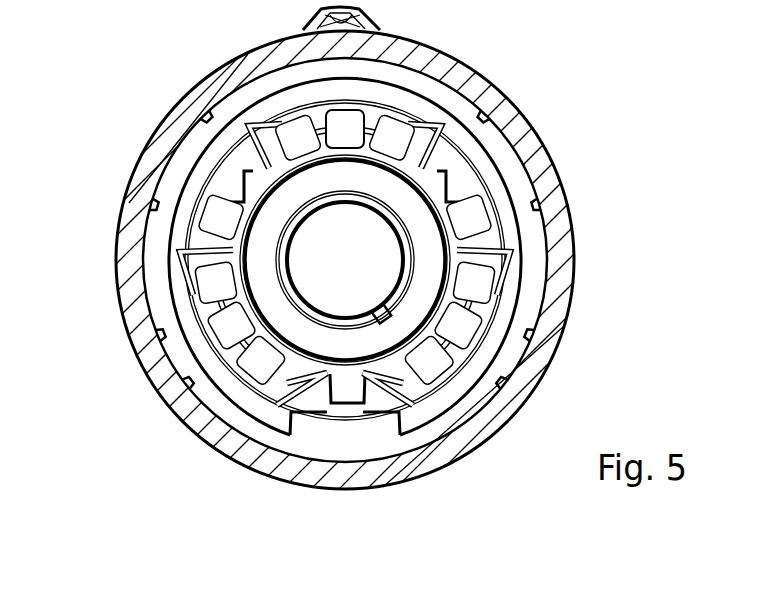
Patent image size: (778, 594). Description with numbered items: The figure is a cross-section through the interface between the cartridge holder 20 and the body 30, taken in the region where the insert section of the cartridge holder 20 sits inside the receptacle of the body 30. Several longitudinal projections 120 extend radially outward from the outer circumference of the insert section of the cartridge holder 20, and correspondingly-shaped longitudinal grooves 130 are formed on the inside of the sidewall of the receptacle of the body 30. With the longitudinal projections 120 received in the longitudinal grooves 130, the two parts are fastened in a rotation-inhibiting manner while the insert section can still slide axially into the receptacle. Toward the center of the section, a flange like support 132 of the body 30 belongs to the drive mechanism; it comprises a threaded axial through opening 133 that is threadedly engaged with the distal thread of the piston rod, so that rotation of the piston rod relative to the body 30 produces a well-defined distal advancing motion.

The cartridge holder 20 is at (530, 275).
The body 30 is at (497, 85).
The longitudinal projection 120 is at (528, 189).
The longitudinal groove 130 is at (536, 165).
The flange like support 132 is at (213, 231).
The threaded axial through opening 133 is at (288, 271).